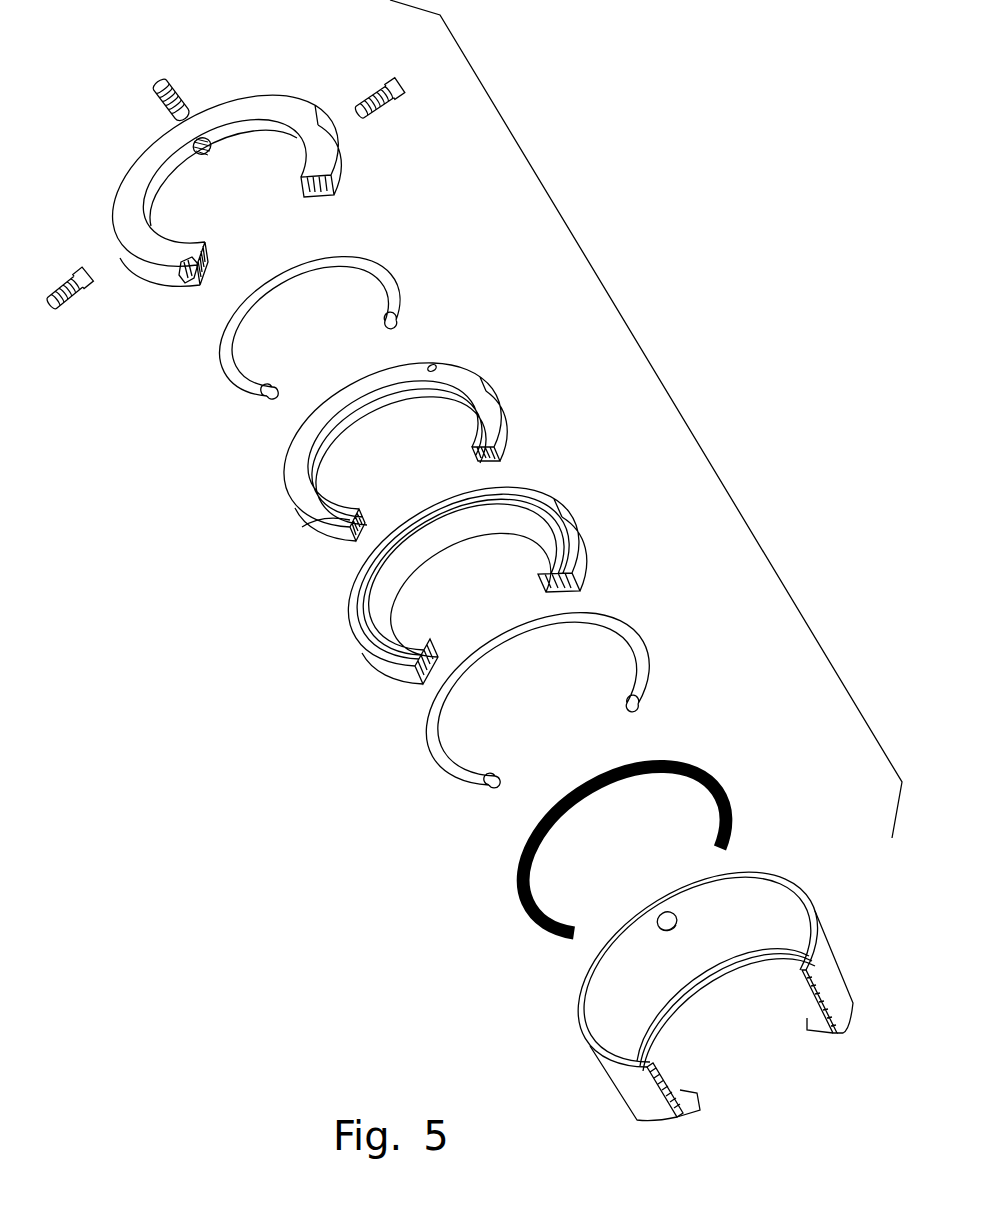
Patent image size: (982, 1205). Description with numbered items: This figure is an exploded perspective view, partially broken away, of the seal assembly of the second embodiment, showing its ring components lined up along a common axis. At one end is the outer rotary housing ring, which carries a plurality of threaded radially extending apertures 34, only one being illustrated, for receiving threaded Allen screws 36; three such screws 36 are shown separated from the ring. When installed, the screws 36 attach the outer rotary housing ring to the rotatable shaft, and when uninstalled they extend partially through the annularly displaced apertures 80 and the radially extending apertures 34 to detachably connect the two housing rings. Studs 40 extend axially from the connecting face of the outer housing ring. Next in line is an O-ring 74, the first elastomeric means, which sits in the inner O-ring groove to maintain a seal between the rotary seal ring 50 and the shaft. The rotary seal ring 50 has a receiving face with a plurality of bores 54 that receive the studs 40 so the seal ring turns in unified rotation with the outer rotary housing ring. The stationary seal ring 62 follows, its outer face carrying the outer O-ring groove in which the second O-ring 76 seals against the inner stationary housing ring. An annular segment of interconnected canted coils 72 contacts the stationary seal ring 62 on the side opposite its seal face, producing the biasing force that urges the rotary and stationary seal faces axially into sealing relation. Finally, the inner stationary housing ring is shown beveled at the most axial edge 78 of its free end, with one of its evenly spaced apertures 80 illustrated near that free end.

The threaded radially extending aperture 34 is at (207, 154).
The threaded Allen screw 36 is at (156, 92).
The stud 40 is at (193, 283).
The rotary seal ring 50 is at (503, 418).
The bore 54 is at (432, 364).
The stationary seal ring 62 is at (560, 483).
The annular segment of interconnected canted coils 72 is at (690, 757).
The O-ring 74 is at (363, 260).
The O-ring 76 is at (608, 622).
The most axial edge 78 is at (750, 876).
The aperture 80 is at (665, 912).